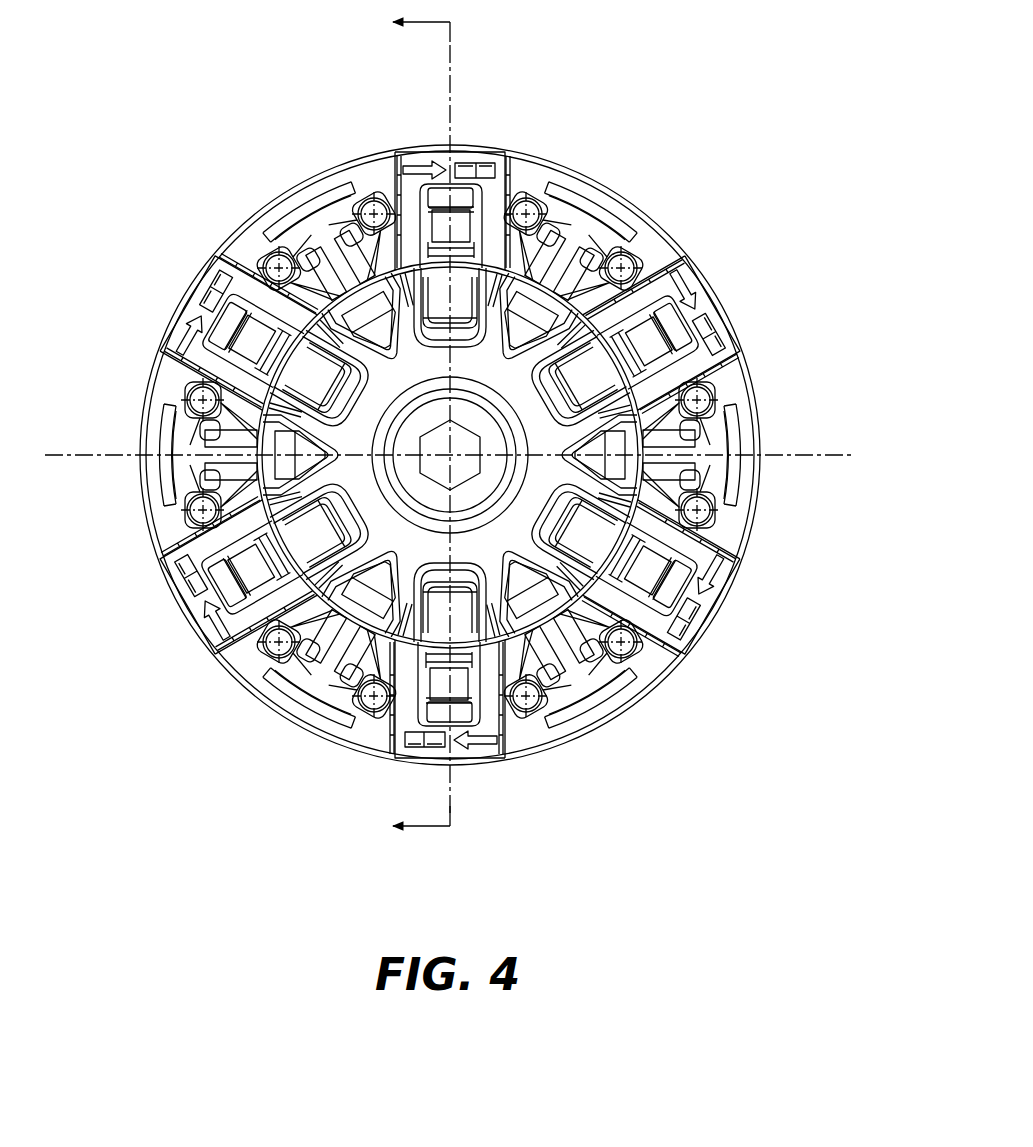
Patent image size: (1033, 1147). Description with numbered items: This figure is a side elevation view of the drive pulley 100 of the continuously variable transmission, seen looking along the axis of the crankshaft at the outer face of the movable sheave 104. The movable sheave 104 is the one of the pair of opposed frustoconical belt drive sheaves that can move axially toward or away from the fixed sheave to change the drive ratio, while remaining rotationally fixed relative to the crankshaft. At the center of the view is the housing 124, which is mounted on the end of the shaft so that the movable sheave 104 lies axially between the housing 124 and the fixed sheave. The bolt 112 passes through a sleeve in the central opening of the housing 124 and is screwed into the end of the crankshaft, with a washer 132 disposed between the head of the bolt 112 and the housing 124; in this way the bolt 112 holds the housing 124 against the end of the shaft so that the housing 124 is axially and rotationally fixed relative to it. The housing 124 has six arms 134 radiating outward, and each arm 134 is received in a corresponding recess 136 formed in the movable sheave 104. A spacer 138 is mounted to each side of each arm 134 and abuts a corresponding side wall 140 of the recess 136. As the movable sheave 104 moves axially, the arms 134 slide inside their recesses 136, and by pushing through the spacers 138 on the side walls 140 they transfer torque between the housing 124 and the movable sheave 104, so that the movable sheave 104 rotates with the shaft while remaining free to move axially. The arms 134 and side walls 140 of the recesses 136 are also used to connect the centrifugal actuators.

The drive pulley 100 is at (243, 128).
The movable sheave 104 is at (582, 237).
The bolt 112 is at (442, 470).
The housing 124 is at (523, 530).
The washer 132 is at (415, 484).
The arm 134 is at (485, 155).
The recess 136 is at (466, 142).
The spacer 138 is at (397, 157).
The side wall 140 is at (381, 157).